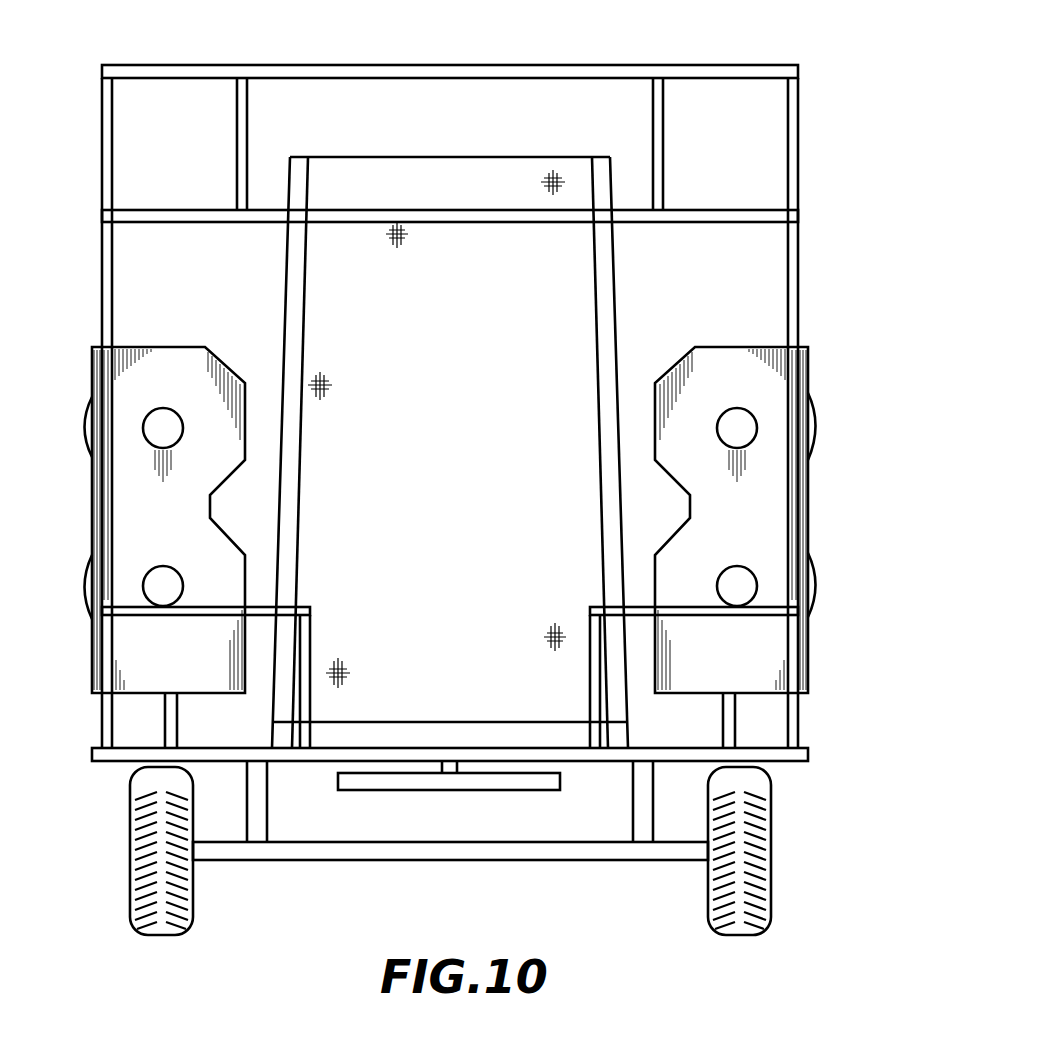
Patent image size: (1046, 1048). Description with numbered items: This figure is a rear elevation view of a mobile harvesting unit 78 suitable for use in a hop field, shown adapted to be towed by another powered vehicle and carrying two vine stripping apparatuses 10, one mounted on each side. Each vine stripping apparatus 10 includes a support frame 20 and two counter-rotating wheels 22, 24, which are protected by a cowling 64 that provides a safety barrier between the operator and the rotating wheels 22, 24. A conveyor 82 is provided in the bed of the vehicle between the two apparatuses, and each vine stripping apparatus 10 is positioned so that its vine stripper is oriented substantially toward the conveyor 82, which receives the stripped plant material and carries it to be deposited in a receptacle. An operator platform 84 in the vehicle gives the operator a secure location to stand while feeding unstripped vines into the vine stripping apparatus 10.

The mobile harvesting unit 78 is at (684, 44).
The operator platform 84 is at (137, 744).
The conveyor 82 is at (586, 283).
The vine stripping apparatus 10 is at (450, 489).
The cowling 64 is at (181, 389).
The counter-rotating wheel 22 is at (86, 422).
The counter-rotating wheel 24 is at (86, 580).
The support frame 20 is at (177, 728).